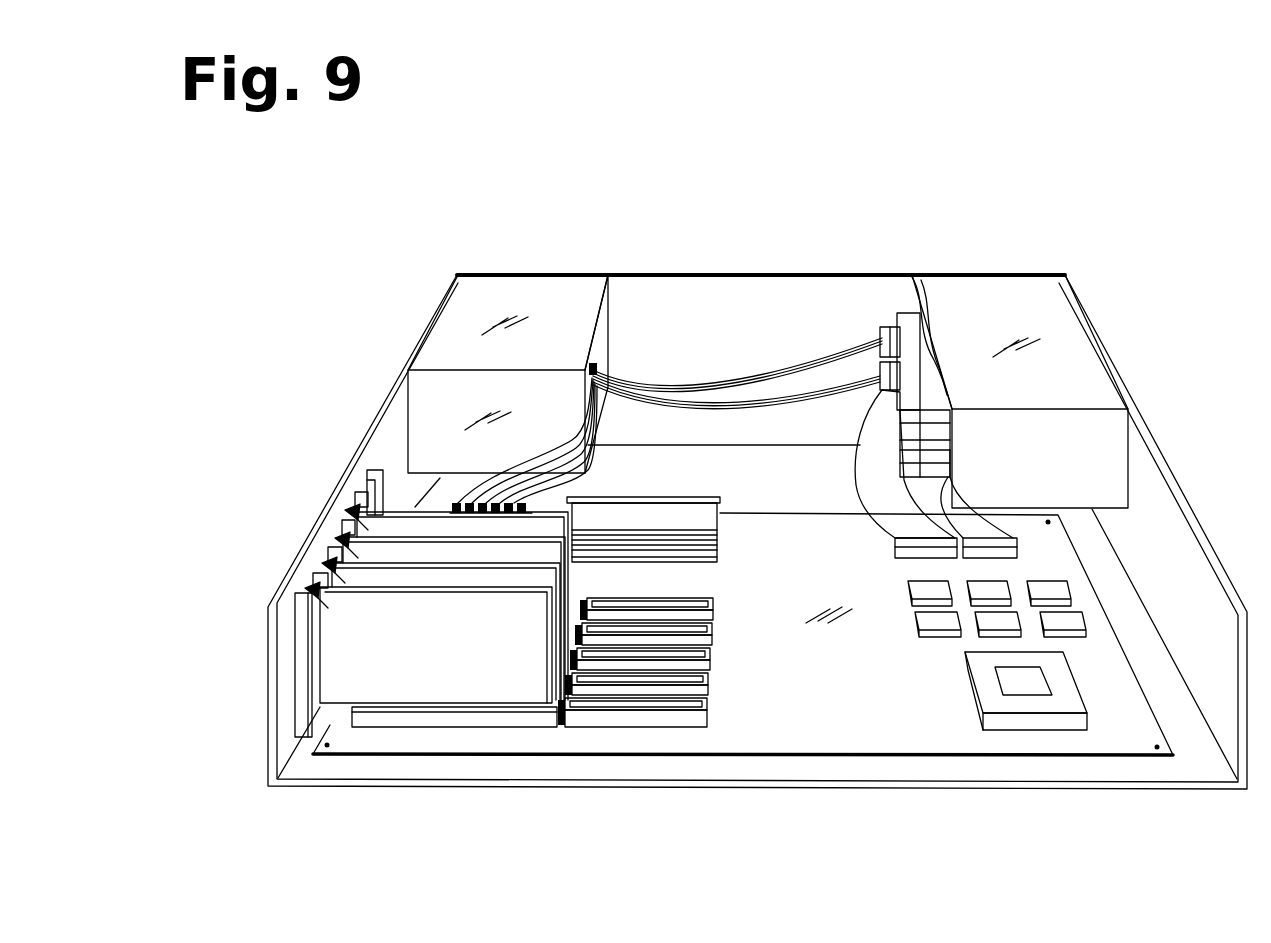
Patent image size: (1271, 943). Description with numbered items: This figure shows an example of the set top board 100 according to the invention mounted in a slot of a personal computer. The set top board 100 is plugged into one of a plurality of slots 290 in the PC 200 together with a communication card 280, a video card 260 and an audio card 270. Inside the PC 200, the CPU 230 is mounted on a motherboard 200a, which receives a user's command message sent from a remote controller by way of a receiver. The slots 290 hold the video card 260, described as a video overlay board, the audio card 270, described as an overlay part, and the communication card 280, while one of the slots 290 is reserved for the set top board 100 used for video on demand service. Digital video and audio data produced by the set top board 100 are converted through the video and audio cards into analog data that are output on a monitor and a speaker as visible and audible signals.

The PC 200 is at (743, 227).
The motherboard 200a is at (825, 730).
The CPU 230 is at (1023, 688).
The slots 290 is at (727, 602).
The communication card 280 is at (353, 510).
The audio card 270 is at (335, 537).
The video card 260 is at (328, 565).
The set top board 100 is at (313, 595).